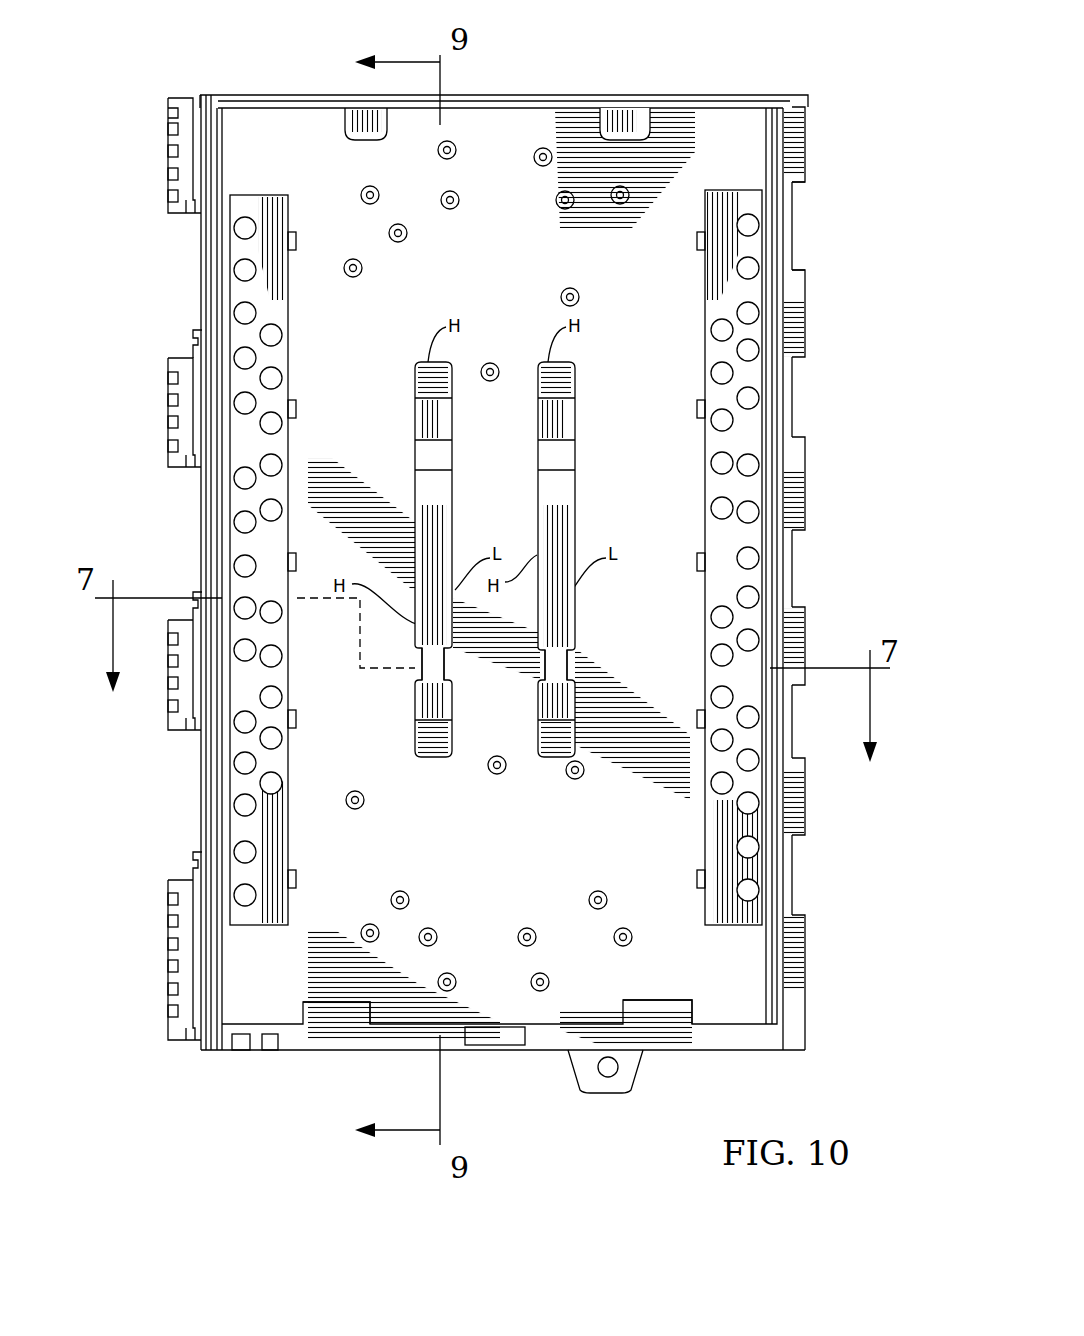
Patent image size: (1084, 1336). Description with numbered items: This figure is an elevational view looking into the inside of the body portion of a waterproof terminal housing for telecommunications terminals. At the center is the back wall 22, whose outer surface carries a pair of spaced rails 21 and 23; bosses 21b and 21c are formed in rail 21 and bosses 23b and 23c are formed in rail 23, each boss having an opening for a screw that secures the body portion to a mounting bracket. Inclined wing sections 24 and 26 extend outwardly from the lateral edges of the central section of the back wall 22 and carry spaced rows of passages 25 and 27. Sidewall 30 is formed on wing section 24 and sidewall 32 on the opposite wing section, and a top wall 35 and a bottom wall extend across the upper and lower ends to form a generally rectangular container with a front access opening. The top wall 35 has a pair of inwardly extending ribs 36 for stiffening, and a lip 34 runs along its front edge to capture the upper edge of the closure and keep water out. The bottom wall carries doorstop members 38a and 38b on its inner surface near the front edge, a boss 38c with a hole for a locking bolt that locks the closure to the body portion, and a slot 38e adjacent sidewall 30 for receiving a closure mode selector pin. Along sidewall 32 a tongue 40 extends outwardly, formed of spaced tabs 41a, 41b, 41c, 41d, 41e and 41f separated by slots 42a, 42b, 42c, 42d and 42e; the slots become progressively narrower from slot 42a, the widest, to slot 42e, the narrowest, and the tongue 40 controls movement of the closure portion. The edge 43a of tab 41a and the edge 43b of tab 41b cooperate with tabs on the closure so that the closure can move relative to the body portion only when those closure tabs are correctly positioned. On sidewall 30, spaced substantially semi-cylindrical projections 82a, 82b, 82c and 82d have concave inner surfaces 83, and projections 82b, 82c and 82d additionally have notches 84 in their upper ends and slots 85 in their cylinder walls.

The rail 21 is at (445, 555).
The boss 21b is at (420, 450).
The boss 21c is at (424, 662).
The back wall 22 is at (499, 249).
The rail 23 is at (560, 535).
The boss 23b is at (565, 455).
The boss 23c is at (563, 668).
The wing section 24 is at (300, 280).
The passages 25 is at (272, 378).
The wing section 26 is at (690, 300).
The passages 27 is at (722, 373).
The sidewall 30 is at (225, 985).
The sidewall 32 is at (778, 965).
The lip 34 is at (528, 100).
The top wall 35 is at (678, 93).
The ribs 36 is at (355, 140).
The doorstop member 38a is at (335, 1002).
The doorstop member 38b is at (660, 1000).
The boss 38c is at (508, 1045).
The slot 38e is at (260, 1055).
The tongue 40 is at (818, 1010).
The tab 41a is at (795, 160).
The tab 41b is at (800, 325).
The tab 41c is at (800, 470).
The tab 41d is at (800, 645).
The tab 41e is at (800, 812).
The tab 41f is at (800, 970).
The slot 42a is at (795, 245).
The slot 42b is at (795, 390).
The slot 42c is at (795, 565).
The slot 42d is at (795, 735).
The slot 42e is at (795, 878).
The edge of tab 41a 43a is at (795, 232).
The edge of tab 41b 43b is at (795, 268).
The semi-cylindrical projection 82a is at (178, 205).
The semi-cylindrical projection 82b is at (172, 455).
The semi-cylindrical projection 82c is at (172, 720).
The semi-cylindrical projection 82d is at (172, 1025).
The concave inner surface 83 is at (193, 200).
The notch 84 is at (200, 340).
The slot 85 is at (170, 172).